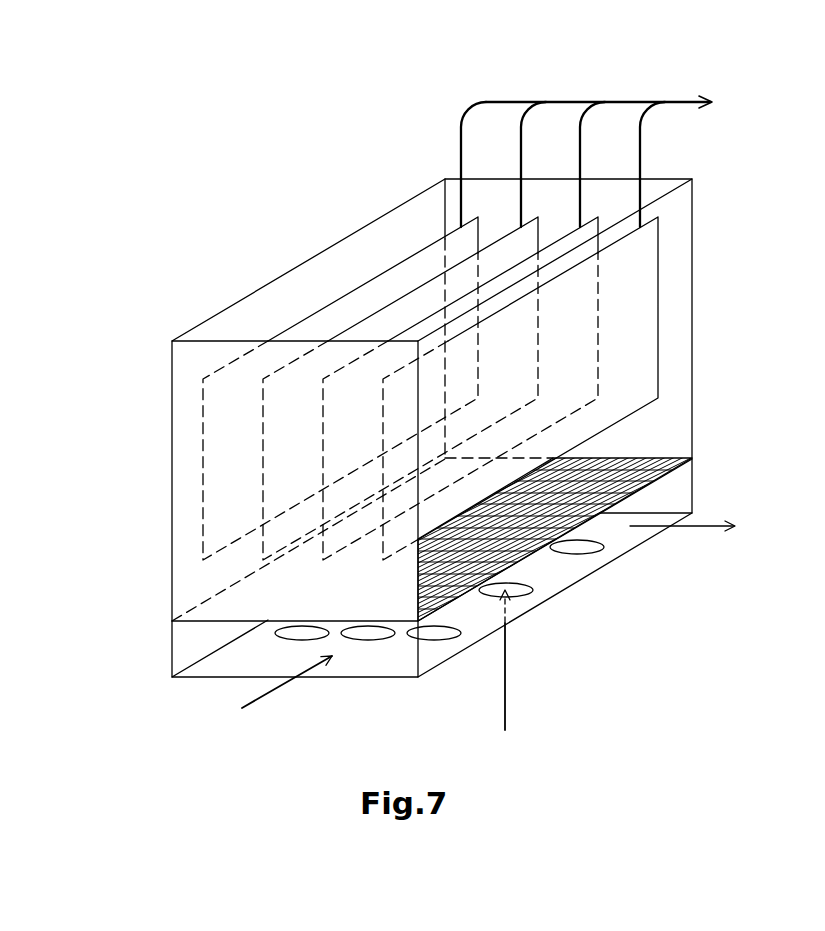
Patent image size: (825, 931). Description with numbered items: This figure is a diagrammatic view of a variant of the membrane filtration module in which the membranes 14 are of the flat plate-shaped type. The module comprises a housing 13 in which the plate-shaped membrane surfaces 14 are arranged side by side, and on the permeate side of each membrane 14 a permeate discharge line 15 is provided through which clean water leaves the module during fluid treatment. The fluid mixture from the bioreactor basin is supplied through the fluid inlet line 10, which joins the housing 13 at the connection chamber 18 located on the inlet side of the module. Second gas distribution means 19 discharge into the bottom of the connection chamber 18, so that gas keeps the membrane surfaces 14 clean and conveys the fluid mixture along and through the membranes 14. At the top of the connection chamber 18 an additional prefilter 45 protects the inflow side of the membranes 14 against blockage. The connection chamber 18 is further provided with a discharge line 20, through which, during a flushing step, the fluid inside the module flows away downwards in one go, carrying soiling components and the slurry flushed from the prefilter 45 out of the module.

The fluid inlet line 10 is at (278, 693).
The housing 13 is at (167, 422).
The membrane surface 14 is at (330, 302).
The permeate discharge line 15 is at (587, 100).
The connection chamber 18 is at (168, 645).
The second gas distribution means 19 is at (508, 665).
The discharge line 20 is at (692, 528).
The prefilter 45 is at (645, 450).